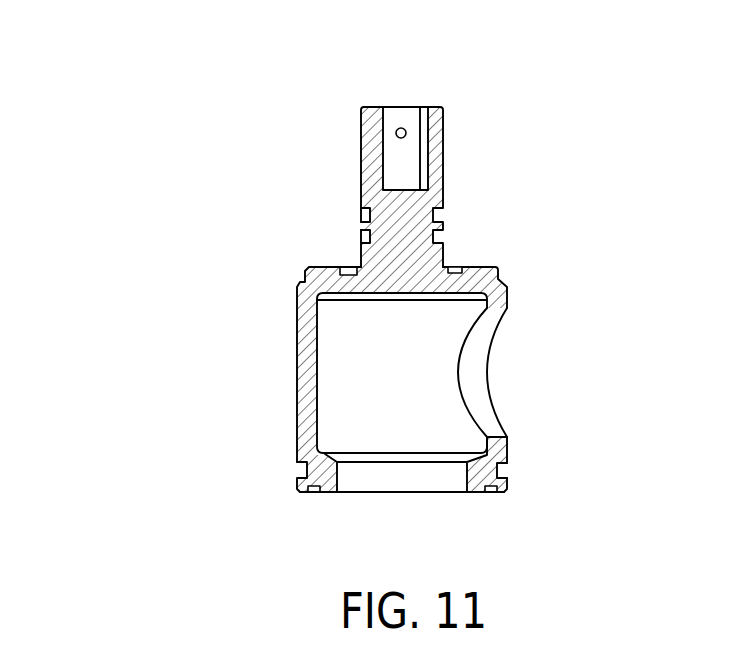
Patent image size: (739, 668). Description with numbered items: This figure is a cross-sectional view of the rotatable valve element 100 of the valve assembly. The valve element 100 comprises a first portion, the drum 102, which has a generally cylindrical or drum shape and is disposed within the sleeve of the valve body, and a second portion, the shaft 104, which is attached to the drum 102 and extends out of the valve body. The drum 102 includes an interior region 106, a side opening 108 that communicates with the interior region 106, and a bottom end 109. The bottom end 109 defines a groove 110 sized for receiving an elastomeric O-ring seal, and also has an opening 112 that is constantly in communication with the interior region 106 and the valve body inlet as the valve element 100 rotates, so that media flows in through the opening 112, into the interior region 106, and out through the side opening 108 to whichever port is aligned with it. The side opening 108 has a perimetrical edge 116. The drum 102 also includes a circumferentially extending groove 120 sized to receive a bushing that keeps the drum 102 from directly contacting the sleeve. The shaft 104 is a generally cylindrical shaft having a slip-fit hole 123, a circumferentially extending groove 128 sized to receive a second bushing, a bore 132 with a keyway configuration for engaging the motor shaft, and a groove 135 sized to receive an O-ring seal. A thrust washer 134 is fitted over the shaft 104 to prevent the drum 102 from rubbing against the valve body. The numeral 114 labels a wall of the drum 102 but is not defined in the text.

The rotatable valve element 100 is at (314, 295).
The drum 102 is at (297, 436).
The shaft 104 is at (445, 165).
The interior region 106 is at (335, 378).
The side opening 108 is at (495, 333).
The bottom end 109 is at (447, 494).
The groove 110 is at (492, 494).
The opening 112 is at (382, 478).
The side wall 114 is at (297, 329).
The perimetrical edge 116 is at (473, 393).
The circumferentially extending groove 120 is at (307, 473).
The slip-fit hole 123 is at (406, 133).
The circumferentially extending groove 128 is at (366, 213).
The bore 132 is at (410, 117).
The thrust washer 134 is at (456, 267).
The groove 135 is at (364, 240).